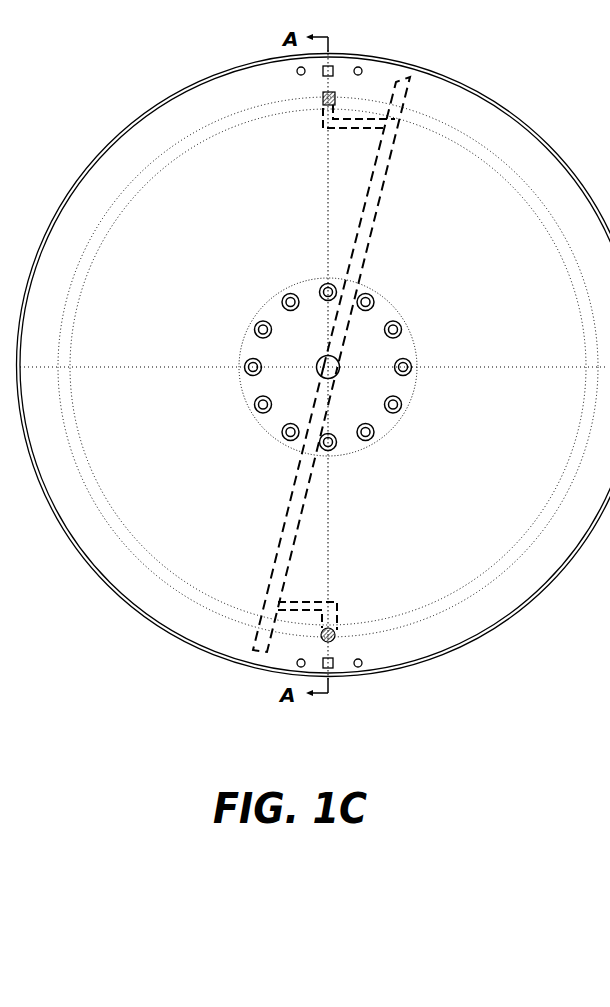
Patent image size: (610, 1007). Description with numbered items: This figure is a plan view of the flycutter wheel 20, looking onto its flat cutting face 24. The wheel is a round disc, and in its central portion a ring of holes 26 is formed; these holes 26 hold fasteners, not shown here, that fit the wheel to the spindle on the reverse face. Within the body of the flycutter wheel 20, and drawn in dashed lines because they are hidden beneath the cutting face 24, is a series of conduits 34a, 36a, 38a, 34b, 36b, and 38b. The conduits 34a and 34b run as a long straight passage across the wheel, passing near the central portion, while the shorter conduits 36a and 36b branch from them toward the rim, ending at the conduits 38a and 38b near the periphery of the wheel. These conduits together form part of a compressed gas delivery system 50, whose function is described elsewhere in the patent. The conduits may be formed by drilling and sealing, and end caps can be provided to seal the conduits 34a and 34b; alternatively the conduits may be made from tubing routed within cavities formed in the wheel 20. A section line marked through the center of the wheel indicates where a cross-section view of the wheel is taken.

The flycutter wheel 20 is at (96, 704).
The flat cutting face 24 is at (164, 443).
The holes 26 is at (245, 360).
The conduit 34a is at (380, 202).
The conduit 34b is at (295, 472).
The conduit 36a is at (350, 130).
The conduit 36b is at (307, 598).
The conduit 38a is at (325, 107).
The conduit 38b is at (337, 612).
The compressed gas delivery system 50 is at (442, 315).